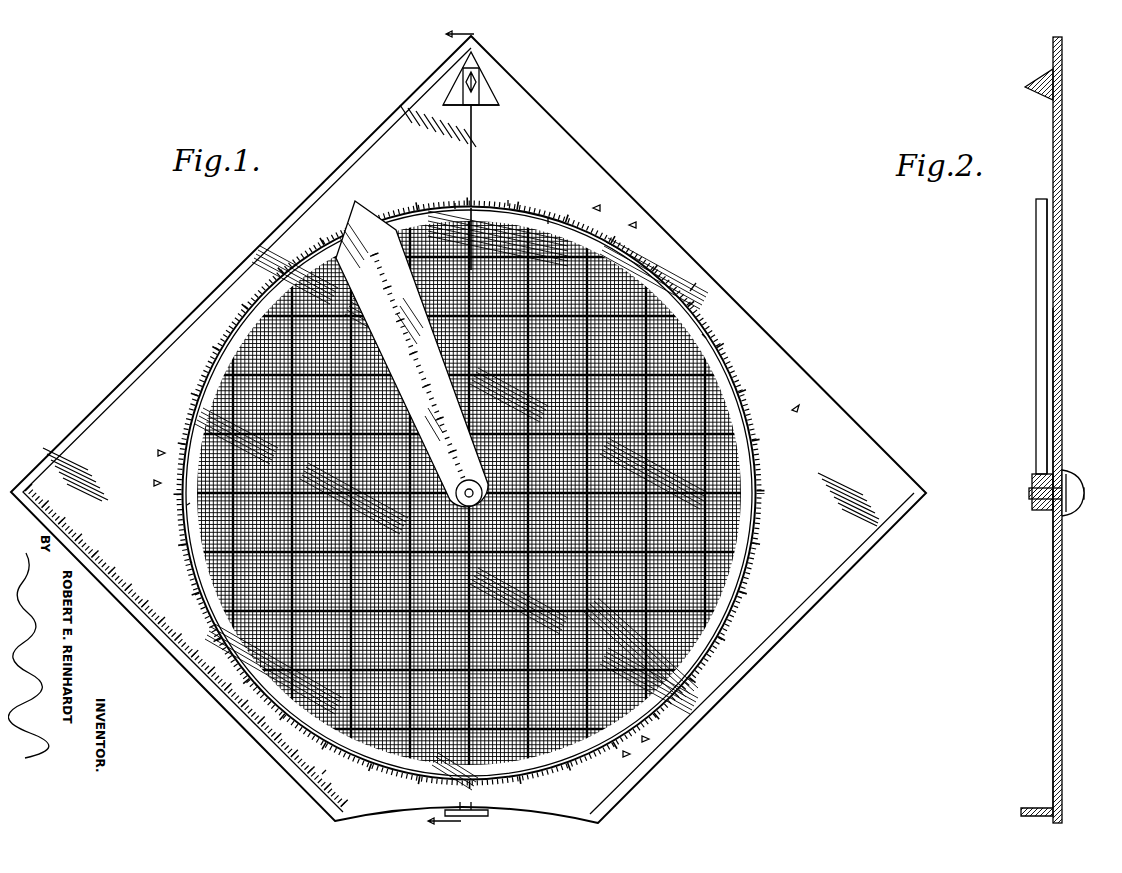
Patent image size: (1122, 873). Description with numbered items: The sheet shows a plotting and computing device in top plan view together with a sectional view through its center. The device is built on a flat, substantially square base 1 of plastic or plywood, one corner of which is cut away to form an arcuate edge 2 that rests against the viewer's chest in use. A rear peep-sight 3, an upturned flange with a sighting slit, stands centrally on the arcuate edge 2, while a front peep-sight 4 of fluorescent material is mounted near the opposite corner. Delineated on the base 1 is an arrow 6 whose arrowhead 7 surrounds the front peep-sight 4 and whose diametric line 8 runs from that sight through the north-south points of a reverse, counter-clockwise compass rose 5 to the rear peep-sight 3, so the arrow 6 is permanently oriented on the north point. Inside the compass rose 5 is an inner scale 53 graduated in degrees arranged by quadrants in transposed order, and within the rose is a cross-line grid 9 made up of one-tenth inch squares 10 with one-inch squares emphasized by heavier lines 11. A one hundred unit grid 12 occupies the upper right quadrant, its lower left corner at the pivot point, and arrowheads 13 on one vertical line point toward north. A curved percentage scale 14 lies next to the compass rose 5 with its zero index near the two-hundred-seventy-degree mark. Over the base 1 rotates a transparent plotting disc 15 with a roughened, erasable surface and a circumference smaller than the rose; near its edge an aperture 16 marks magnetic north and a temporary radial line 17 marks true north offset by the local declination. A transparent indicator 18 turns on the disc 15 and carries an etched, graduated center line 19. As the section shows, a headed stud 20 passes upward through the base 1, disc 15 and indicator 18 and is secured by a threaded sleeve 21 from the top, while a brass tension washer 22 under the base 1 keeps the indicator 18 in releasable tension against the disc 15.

In FIG. 1, the base 1 is at (824, 427).
In FIG. 2, the base 1 is at (1043, 236).
In FIG. 1, the arcuate edge 2 is at (538, 803).
In FIG. 2, the arcuate edge 2 is at (1050, 810).
In FIG. 1, the rear peep-sight 3 is at (470, 805).
In FIG. 2, the rear peep-sight 3 is at (1034, 799).
In FIG. 1, the front peep-sight 4 is at (478, 70).
In FIG. 2, the front peep-sight 4 is at (1030, 86).
In FIG. 1, the reverse compass rose 5 is at (624, 216).
In FIG. 1, the arrow 6 is at (432, 88).
In FIG. 1, the arrowhead 7 is at (492, 102).
In FIG. 1, the diametric line 8 is at (461, 118).
In FIG. 1, the cross-line grid 9 is at (645, 252).
In FIG. 1, the one-tenth inch squares 10 is at (698, 330).
In FIG. 1, the heavier lines 11 is at (681, 283).
In FIG. 1, the 100 unit grid 12 is at (732, 341).
In FIG. 1, the arrowheads 13 is at (279, 395).
In FIG. 1, the curved percentage scale 14 is at (786, 401).
In FIG. 1, the transparent plotting disc 15 is at (540, 210).
In FIG. 2, the transparent plotting disc 15 is at (1039, 665).
In FIG. 1, the aperture 16 is at (552, 245).
In FIG. 1, the temporary line 17 is at (447, 195).
In FIG. 1, the transparent indicator 18 is at (350, 290).
In FIG. 2, the transparent indicator 18 is at (1030, 292).
In FIG. 1, the center line 19 is at (330, 248).
In FIG. 2, the headed stud 20 is at (1068, 494).
In FIG. 1, the threaded sleeve 21 is at (467, 495).
In FIG. 2, the threaded sleeve 21 is at (1021, 474).
In FIG. 2, the brass tension washer 22 is at (1061, 461).
In FIG. 1, the inner scale 53 is at (500, 192).